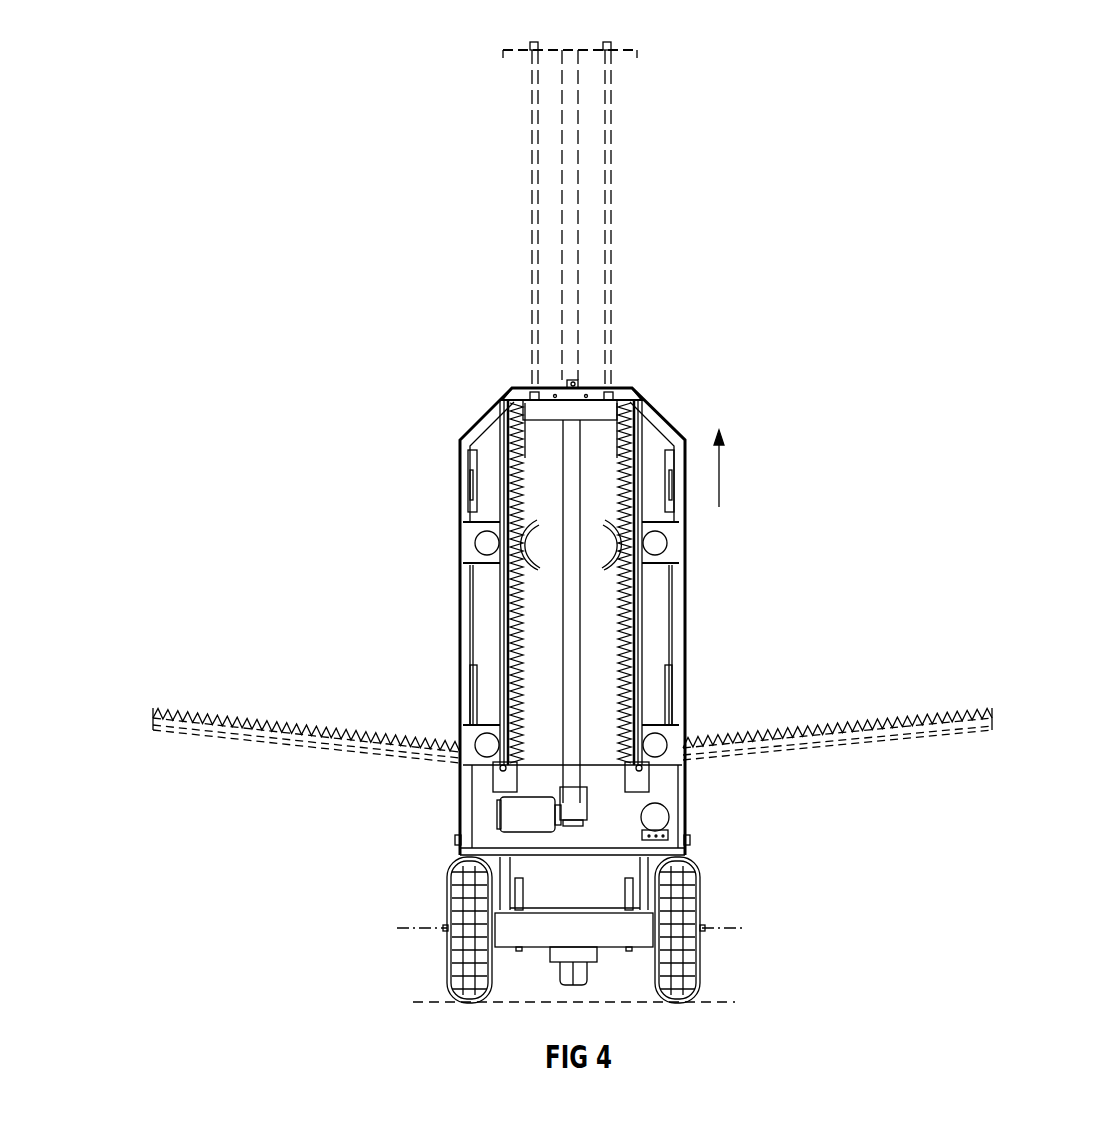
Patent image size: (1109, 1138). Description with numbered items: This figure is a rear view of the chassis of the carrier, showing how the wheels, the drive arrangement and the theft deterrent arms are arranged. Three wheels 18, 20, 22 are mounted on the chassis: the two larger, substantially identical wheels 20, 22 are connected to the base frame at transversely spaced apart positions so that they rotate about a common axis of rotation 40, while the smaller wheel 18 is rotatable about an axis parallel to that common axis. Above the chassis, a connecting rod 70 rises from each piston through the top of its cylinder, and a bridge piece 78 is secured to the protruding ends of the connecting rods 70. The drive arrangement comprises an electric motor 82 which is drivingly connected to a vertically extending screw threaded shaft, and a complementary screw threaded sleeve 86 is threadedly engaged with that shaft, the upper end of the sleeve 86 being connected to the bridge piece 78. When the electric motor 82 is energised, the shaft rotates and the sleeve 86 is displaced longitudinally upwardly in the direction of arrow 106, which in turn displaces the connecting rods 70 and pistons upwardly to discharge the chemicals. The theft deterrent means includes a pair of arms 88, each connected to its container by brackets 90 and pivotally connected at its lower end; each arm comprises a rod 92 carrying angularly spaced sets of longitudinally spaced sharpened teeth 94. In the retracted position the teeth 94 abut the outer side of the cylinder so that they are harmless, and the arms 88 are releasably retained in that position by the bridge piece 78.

The wheel 18 is at (578, 968).
The wheel 20 is at (693, 972).
The wheel 22 is at (455, 966).
The common axis of rotation 40 is at (720, 925).
The connecting rod 70 is at (538, 275).
The bridge piece 78 is at (565, 50).
The electric motor 82 is at (503, 812).
The screw threaded sleeve 86 is at (573, 192).
The arm 88 is at (466, 628).
The bracket 90 is at (497, 778).
The rod 92 is at (503, 462).
The sharpened teeth 94 is at (571, 532).
The arrow 106 is at (722, 482).